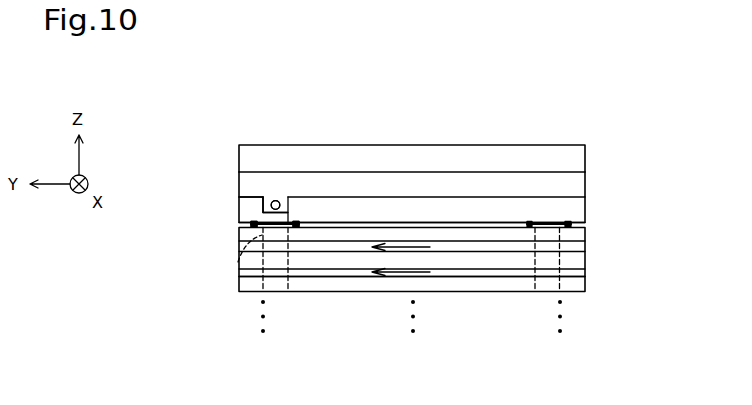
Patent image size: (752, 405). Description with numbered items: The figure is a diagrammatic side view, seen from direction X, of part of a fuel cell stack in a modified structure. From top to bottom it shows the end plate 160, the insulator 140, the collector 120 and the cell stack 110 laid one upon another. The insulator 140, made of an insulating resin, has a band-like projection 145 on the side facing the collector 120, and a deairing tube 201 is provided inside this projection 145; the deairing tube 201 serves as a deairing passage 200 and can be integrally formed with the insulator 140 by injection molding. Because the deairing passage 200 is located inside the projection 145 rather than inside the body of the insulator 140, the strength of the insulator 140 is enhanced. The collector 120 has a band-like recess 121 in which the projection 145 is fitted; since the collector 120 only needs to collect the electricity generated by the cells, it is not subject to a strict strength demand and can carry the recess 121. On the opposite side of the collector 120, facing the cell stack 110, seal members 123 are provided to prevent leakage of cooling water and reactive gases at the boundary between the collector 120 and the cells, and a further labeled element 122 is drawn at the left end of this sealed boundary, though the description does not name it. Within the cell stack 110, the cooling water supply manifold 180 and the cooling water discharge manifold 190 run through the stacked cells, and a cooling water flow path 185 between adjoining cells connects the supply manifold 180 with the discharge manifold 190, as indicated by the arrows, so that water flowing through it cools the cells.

The end plate 160 is at (585, 158).
The insulator 140 is at (585, 185).
The collector 120 is at (585, 210).
The projection 145 is at (265, 203).
The recess 121 is at (262, 210).
The pad 122 is at (255, 222).
The seal member 123 is at (585, 225).
The deairing tube 201 is at (275, 200).
The deairing passage 200 is at (309, 162).
The cell stack 110 is at (585, 237).
The cooling water supply manifold 180 is at (560, 235).
The cooling water discharge manifold 190 is at (238, 263).
The cooling water flow path 185 is at (472, 272).